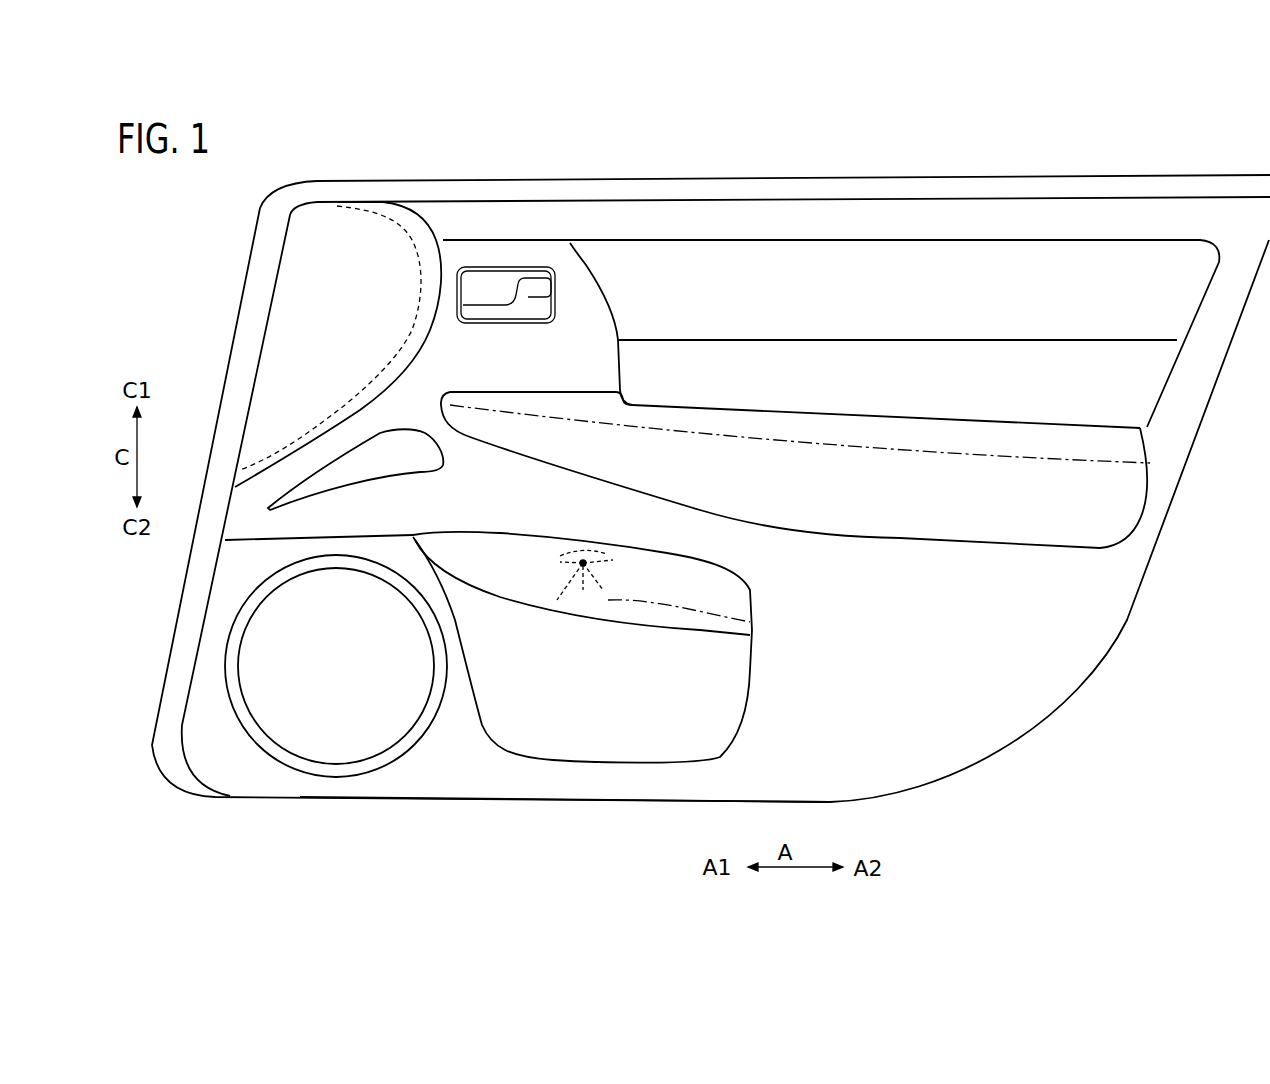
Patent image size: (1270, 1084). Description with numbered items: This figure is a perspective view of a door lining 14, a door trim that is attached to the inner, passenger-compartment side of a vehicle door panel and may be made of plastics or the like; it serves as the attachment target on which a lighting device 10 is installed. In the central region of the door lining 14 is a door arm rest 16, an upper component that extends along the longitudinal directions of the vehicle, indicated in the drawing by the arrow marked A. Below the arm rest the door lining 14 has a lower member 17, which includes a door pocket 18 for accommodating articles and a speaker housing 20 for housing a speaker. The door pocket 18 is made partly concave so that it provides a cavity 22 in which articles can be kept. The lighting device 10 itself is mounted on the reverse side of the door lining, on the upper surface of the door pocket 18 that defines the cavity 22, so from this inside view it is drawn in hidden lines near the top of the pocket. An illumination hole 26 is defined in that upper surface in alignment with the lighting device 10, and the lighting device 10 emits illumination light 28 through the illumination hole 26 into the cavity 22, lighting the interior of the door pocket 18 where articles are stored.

The lighting device 10 is at (595, 565).
The door lining 14 is at (634, 180).
The door arm rest 16 is at (1130, 513).
The lower member 17 is at (613, 787).
The door pocket 18 is at (582, 647).
The speaker housing 20 is at (340, 740).
The cavity 22 is at (643, 618).
The illumination hole 26 is at (583, 590).
The illumination light 28 is at (752, 622).